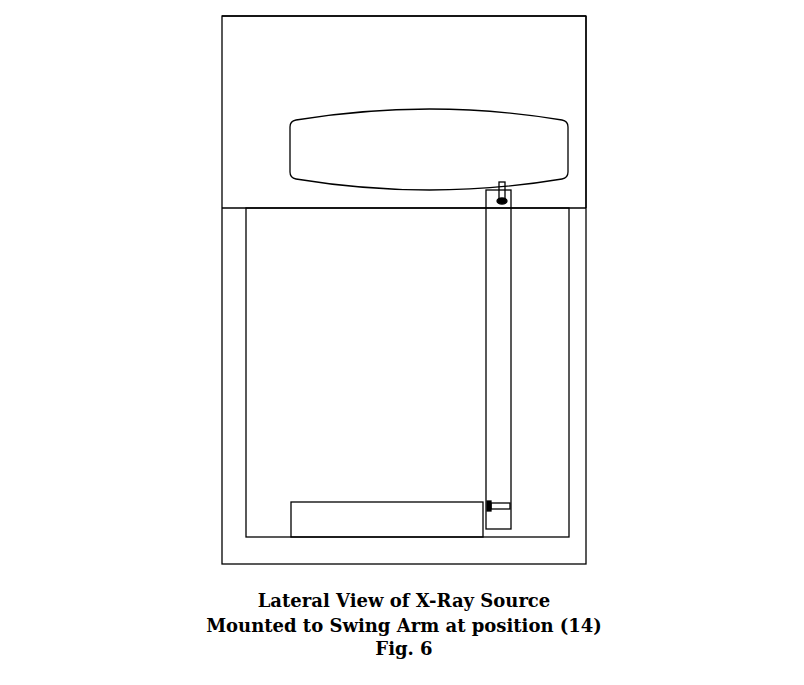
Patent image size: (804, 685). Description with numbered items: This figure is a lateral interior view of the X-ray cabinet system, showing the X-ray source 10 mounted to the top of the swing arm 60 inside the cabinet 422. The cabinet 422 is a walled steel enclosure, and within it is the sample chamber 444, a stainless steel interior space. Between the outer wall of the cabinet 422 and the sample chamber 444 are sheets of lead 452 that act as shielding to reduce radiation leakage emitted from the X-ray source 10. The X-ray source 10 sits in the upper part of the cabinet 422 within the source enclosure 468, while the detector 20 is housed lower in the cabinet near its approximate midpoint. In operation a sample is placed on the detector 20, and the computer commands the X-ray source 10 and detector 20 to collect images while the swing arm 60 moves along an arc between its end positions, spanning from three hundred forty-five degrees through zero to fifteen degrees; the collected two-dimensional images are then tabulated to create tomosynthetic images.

The cabinet 422 is at (222, 227).
The sheets of lead 452 is at (232, 313).
The sample chamber 444 is at (246, 371).
The source enclosure 468 is at (586, 103).
The X-ray source 10 is at (568, 147).
The swing arm 60 is at (511, 361).
The detector 20 is at (291, 519).